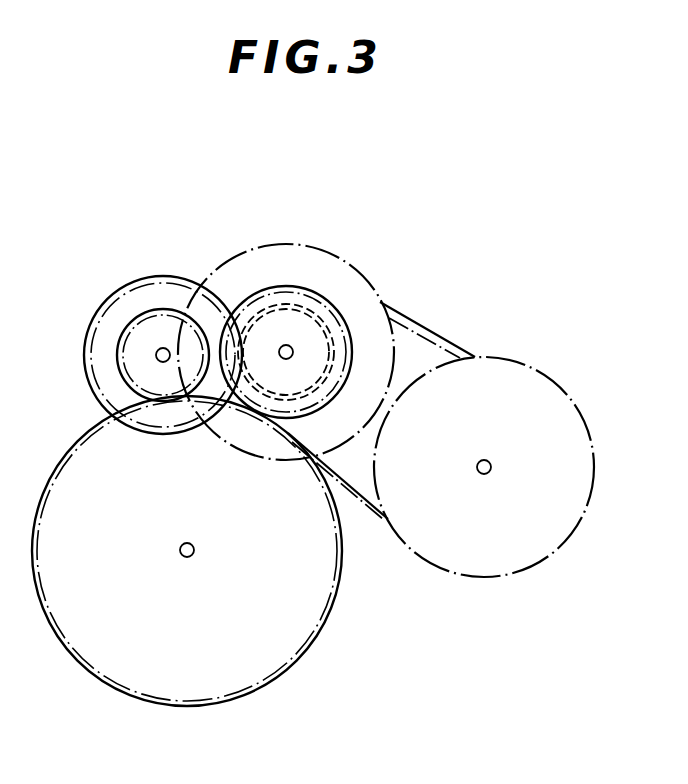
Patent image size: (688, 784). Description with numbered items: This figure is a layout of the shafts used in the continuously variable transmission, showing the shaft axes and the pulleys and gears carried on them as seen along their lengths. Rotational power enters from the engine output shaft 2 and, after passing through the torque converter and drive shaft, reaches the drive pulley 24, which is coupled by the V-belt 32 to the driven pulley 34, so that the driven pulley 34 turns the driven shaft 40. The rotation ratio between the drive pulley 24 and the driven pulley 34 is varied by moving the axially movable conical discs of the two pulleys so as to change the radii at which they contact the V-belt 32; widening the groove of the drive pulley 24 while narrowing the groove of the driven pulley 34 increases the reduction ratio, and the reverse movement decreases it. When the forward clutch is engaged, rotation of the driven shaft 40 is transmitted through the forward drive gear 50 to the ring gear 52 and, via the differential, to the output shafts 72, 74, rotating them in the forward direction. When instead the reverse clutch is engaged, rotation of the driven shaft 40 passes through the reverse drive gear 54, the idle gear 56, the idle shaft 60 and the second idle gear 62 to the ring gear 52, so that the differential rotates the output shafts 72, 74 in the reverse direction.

The engine output shaft 2 is at (490, 462).
The drive pulley 24 is at (562, 380).
The V-belt 32 is at (448, 333).
The driven pulley 34 is at (370, 283).
The driven shaft 40 is at (287, 345).
The forward drive gear 50 is at (268, 286).
The ring gear 52 is at (330, 613).
The reverse drive gear 54 is at (300, 304).
The idle gear 56 is at (155, 276).
The idle shaft 60 is at (156, 357).
The idle gear 62 is at (127, 328).
The output shaft 72 is at (234, 573).
The output shaft 74 is at (193, 556).